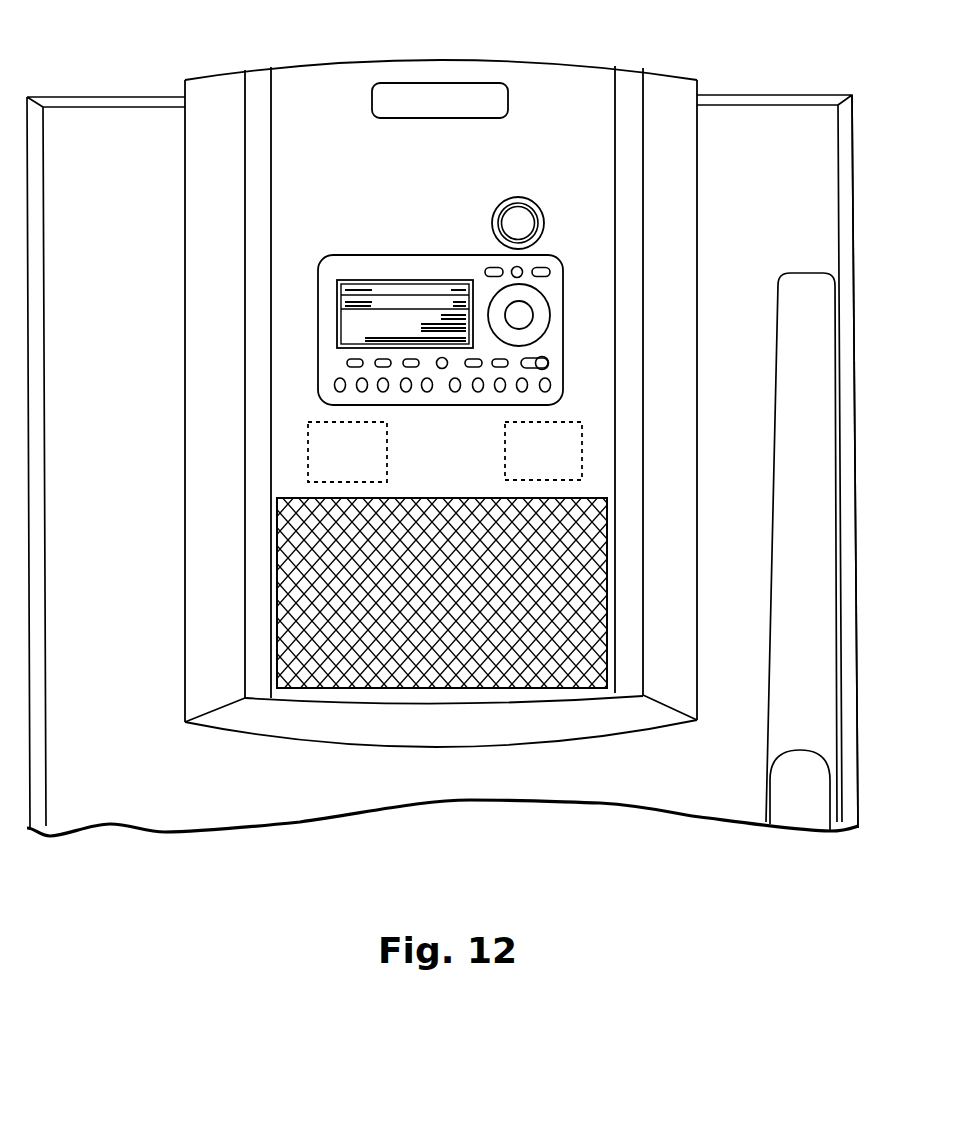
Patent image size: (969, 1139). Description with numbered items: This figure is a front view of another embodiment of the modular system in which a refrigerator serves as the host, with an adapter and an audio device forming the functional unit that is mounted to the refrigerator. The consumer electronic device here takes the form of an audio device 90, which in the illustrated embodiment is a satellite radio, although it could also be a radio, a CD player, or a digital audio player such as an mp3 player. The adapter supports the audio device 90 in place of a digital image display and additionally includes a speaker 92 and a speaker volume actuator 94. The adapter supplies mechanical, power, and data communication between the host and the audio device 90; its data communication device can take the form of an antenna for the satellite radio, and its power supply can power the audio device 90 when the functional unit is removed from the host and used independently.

The audio device 90 is at (330, 357).
The speaker 92 is at (322, 507).
The speaker volume actuator 94 is at (530, 200).